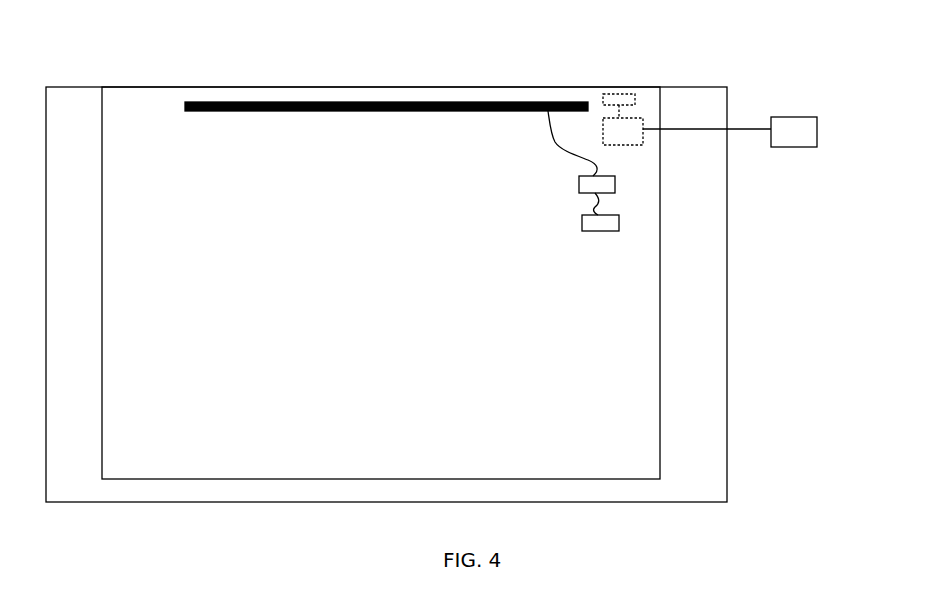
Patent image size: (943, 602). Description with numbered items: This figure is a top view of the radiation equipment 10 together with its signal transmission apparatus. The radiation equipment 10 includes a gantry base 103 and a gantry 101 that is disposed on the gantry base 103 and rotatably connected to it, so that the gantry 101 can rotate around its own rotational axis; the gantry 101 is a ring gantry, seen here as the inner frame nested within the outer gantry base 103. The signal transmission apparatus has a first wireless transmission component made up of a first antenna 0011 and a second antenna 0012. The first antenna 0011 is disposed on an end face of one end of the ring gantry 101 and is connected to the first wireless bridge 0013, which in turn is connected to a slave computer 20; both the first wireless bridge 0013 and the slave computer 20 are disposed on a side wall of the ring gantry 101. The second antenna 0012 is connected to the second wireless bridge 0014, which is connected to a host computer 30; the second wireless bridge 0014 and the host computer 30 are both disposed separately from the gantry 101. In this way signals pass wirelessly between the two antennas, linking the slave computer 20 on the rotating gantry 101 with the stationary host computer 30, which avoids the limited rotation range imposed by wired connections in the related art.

The radiation equipment 10 is at (449, 294).
The gantry 101 is at (667, 291).
The gantry base 103 is at (733, 352).
The first antenna 0011 is at (460, 96).
The second antenna 0012 is at (627, 87).
The first wireless bridge 0013 is at (572, 184).
The second wireless bridge 0014 is at (652, 140).
The slave computer 20 is at (575, 222).
The host computer 30 is at (788, 111).